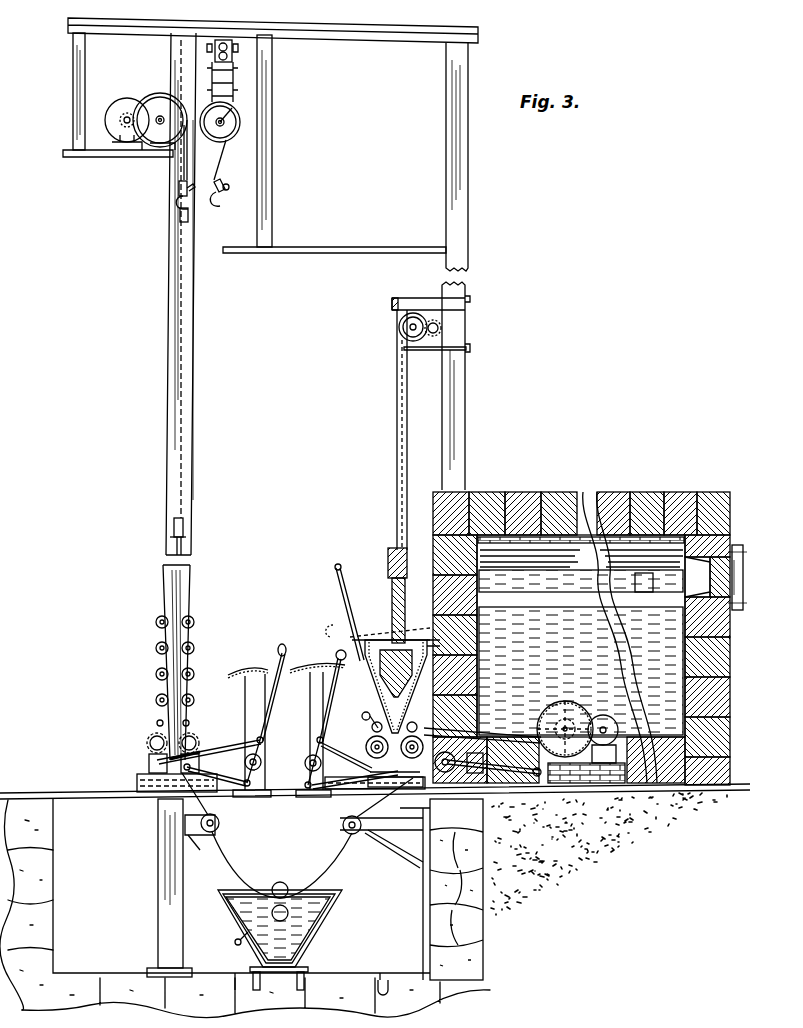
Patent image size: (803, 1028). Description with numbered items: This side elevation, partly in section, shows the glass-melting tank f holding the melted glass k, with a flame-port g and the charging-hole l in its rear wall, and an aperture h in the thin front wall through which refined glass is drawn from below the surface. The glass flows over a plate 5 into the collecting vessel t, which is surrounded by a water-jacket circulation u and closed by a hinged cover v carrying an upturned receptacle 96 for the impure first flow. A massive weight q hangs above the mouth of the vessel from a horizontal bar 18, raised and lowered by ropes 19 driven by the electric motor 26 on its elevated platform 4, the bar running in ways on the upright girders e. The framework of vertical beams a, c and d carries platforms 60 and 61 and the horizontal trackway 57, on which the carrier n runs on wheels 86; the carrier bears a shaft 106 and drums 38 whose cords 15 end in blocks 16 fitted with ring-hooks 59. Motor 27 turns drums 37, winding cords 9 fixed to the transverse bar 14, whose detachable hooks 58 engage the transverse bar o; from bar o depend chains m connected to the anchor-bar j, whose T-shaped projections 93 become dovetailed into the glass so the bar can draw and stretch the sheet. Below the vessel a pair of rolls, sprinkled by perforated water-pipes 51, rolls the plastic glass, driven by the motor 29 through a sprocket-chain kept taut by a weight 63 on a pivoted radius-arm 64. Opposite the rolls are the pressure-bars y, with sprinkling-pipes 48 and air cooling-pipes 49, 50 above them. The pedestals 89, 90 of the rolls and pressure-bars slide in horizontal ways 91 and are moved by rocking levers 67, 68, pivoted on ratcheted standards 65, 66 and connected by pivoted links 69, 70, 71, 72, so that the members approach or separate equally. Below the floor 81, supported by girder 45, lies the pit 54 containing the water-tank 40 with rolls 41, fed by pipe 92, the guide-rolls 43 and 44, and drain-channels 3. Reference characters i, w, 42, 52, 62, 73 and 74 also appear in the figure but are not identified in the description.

The wheels 86 is at (240, 46).
The trackway 57 is at (228, 40).
The suspensory carrier n is at (227, 82).
The horizontal rotary shaft 106 is at (244, 106).
The motor 27 is at (117, 102).
The drums 37 is at (158, 93).
The drums 38 is at (225, 135).
The suspensory cords 15 is at (224, 160).
The cords 9 is at (183, 170).
The transverse bar 14 is at (179, 186).
The circular segments 58 is at (162, 198).
The transverse bar o is at (180, 216).
The blocks 16 is at (224, 184).
The segmental ring-hooks 59 is at (230, 207).
The platform 60 is at (334, 239).
The vertical I-beam d is at (462, 386).
The electric motor 26 is at (441, 328).
The elevated platform 4 is at (435, 359).
The upright girders e is at (410, 430).
The ropes 19 is at (398, 458).
The horizontal bar 18 is at (388, 552).
The weight q is at (392, 599).
The vertical I-beam c is at (192, 374).
The chains m is at (183, 410).
The anchor-bar j is at (183, 525).
The T-shaped projections 93 is at (172, 540).
The rod i is at (190, 577).
The glass-melting tank f is at (581, 627).
The melted glass k is at (581, 636).
The flame-port g is at (652, 583).
The charging-hole l is at (743, 578).
The plate 5 is at (390, 628).
The aperture h is at (428, 632).
The collecting vessel t is at (372, 680).
The water-jacket circulation u is at (362, 714).
The water-pipes 51 is at (453, 732).
The wheel 52 is at (357, 735).
The knob w is at (334, 568).
The cover v is at (345, 592).
The upturned receptacle 96 is at (336, 656).
The standard 65 is at (247, 732).
The rocking lever 67 is at (272, 713).
The pivoted link 69 is at (239, 752).
The pulley 74 is at (261, 762).
The pivoted link 70 is at (218, 783).
The pedestal 90 is at (261, 764).
The standard 66 is at (315, 730).
The rocking lever 68 is at (316, 736).
The pulley 73 is at (302, 752).
The pivoted link 72 is at (294, 782).
The pivoted link 71 is at (346, 758).
The air cooling-pipe 50 is at (156, 668).
The air cooling-pipe 49 is at (194, 670).
The sprinkling-pipes 48 is at (189, 720).
The pressure-bars y is at (199, 740).
The horizontal ways 91 is at (137, 783).
The pedestal 89 is at (297, 824).
The platform 61 is at (565, 720).
The rotary motor 29 is at (587, 746).
The weight 63 is at (442, 751).
The radius-arm 64 is at (494, 764).
The floor 81 is at (375, 785).
The pit wall 62 is at (578, 878).
The pit 54 is at (245, 908).
The vertical I-beam a is at (158, 856).
The supporting-girder 45 is at (411, 894).
The guide-roll 43 is at (218, 831).
The guide-roll 44 is at (370, 839).
The water-tank 40 is at (285, 940).
The rolls 41 is at (289, 879).
The ball 42 is at (245, 914).
The pipe 92 is at (235, 943).
The drain-channels 3 is at (307, 973).